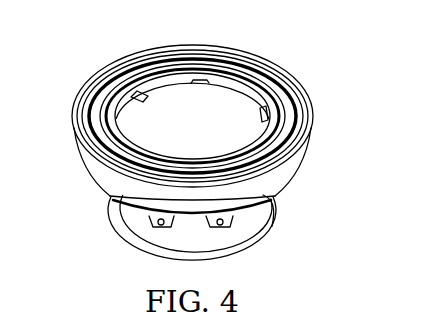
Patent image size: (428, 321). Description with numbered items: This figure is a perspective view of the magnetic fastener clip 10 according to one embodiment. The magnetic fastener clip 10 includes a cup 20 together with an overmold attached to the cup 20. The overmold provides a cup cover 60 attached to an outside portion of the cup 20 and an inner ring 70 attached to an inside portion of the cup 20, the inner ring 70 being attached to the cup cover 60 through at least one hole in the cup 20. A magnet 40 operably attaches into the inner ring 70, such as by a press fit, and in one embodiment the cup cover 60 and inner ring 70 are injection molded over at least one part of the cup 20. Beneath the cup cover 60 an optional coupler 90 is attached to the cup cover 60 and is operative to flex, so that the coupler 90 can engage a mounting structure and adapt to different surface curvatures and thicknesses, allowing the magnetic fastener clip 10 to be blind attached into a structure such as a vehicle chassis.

The magnetic fastener clip 10 is at (199, 137).
The cup 20 is at (282, 92).
The magnet 40 is at (175, 92).
The cup cover 60 is at (309, 142).
The inner ring 70 is at (264, 88).
The coupler 90 is at (296, 193).